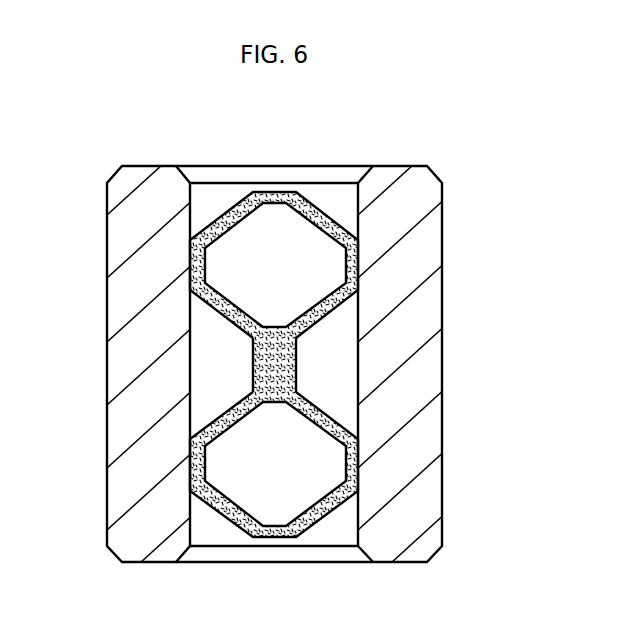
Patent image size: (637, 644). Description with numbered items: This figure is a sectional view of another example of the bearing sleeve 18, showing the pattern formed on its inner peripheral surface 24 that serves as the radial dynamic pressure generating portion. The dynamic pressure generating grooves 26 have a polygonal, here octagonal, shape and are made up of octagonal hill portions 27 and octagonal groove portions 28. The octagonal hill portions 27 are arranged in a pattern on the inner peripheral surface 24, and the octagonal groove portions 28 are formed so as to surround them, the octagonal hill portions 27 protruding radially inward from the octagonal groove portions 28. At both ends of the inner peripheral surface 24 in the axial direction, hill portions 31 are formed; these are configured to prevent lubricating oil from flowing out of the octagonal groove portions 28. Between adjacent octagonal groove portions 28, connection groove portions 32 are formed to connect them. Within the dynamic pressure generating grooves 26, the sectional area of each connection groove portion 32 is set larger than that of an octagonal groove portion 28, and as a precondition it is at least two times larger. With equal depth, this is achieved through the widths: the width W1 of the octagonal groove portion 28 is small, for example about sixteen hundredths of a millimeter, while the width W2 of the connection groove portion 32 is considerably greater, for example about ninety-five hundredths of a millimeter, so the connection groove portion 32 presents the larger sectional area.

The bearing sleeve 18 is at (456, 262).
The inner peripheral surface 24 is at (358, 364).
The dynamic pressure generating grooves 26 is at (184, 464).
The octagonal hill portion 27 is at (237, 465).
The octagonal groove portion 28 is at (221, 413).
The hill portion 31 is at (285, 190).
The connection groove portion 32 is at (265, 360).
The width of octagonal groove portion W1 is at (226, 318).
The width of connection groove portion W2 is at (274, 308).